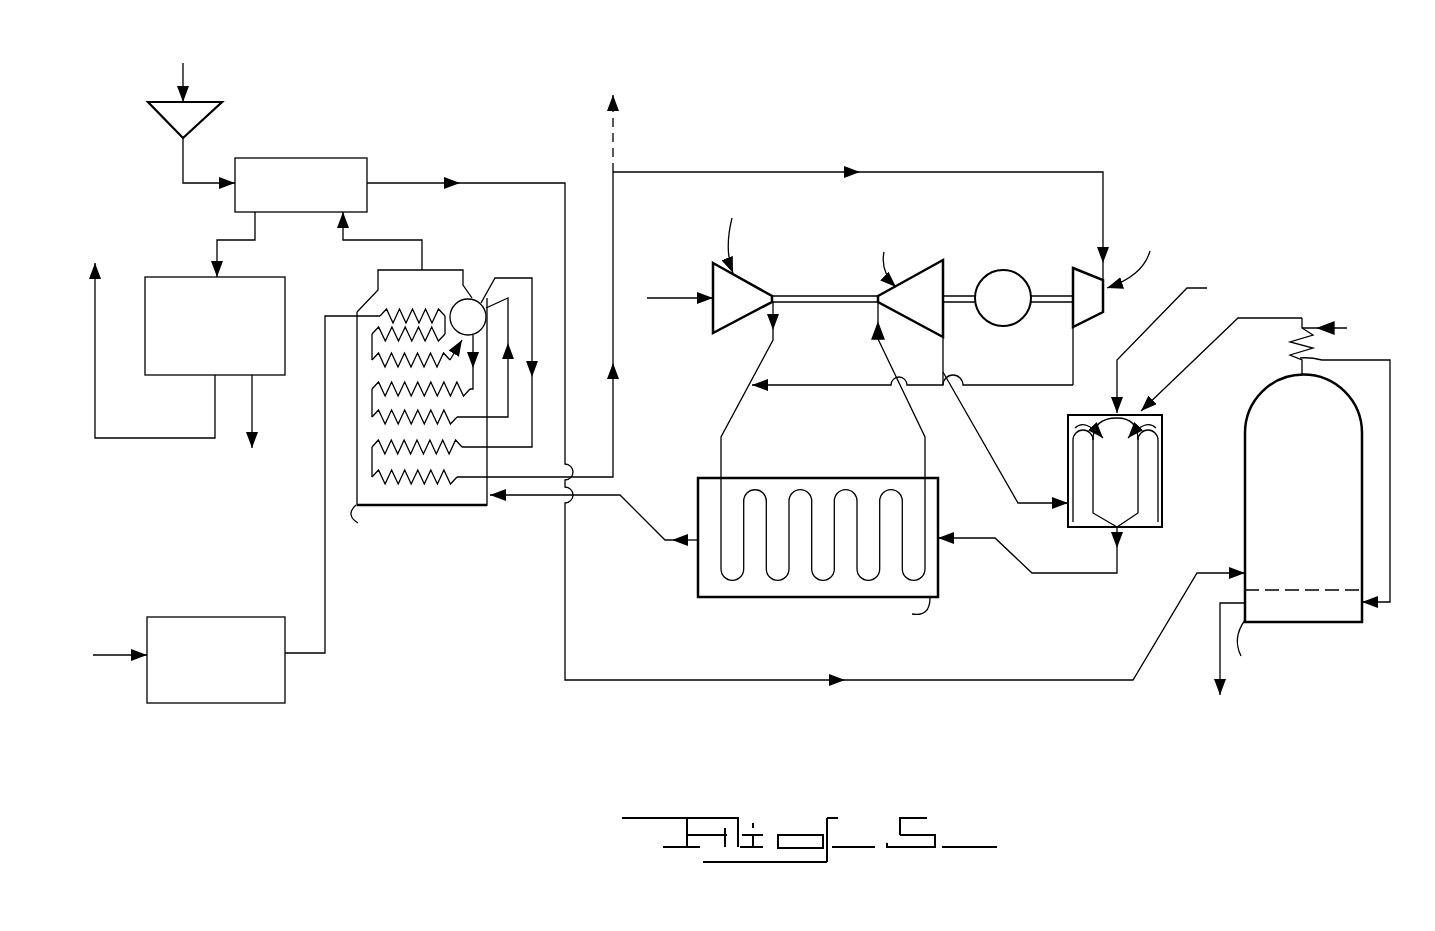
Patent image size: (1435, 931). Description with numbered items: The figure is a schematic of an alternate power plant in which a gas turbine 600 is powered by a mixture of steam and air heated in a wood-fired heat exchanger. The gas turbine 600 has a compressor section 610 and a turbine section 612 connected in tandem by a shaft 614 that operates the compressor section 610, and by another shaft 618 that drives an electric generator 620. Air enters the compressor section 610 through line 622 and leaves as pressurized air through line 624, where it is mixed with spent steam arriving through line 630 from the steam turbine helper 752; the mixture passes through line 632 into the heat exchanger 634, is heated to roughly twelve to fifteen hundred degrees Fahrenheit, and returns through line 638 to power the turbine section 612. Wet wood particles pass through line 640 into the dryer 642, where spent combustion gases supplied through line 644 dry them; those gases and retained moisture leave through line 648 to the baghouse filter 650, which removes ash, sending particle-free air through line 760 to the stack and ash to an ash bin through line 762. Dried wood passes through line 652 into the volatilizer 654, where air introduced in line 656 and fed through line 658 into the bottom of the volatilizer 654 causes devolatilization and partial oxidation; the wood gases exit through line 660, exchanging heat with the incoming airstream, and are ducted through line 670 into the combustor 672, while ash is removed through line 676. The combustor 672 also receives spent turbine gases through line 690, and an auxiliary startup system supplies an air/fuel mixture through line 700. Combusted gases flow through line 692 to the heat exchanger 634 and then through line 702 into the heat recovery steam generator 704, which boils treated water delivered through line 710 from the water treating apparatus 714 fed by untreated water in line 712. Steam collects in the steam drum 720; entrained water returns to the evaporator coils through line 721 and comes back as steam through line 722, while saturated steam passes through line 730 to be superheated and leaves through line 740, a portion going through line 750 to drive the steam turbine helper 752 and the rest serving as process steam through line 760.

The gas turbine 600 is at (852, 291).
The compressor section 610 is at (747, 281).
The turbine section 612 is at (920, 270).
The shaft 614 is at (813, 304).
The shaft 618 is at (956, 303).
The electric generator 620 is at (1003, 269).
The line 622 is at (693, 296).
The line 624 is at (757, 376).
The line 630 is at (800, 386).
The line 632 is at (722, 443).
The heat exchanger 634 is at (795, 478).
The line 638 is at (920, 428).
The line 640 is at (185, 68).
The dryer 642 is at (302, 158).
The line 644 is at (372, 240).
The line 648 is at (255, 228).
The baghouse filter 650 is at (245, 277).
The line 652 is at (420, 183).
The volatilizer 654 is at (1362, 607).
The line 656 is at (1337, 327).
The line 658 is at (1390, 430).
The line 660 is at (1302, 371).
The line 670 is at (1178, 377).
The combustor 672 is at (1162, 474).
The line 676 is at (1220, 672).
The line 690 is at (980, 440).
The line 692 is at (1073, 574).
The line 700 is at (1153, 321).
The line 702 is at (648, 522).
The heat recovery steam generator 704 is at (473, 507).
The line 710 is at (325, 505).
The line 712 is at (96, 655).
The water treating apparatus 714 is at (203, 617).
The steam drum 720 is at (473, 297).
The line 721 is at (476, 382).
The line 722 is at (512, 404).
The line 730 is at (505, 279).
The line 740 is at (615, 418).
The line 750 is at (733, 172).
The steam turbine helper 752 is at (1082, 328).
The line 760 is at (160, 438).
The line 762 is at (253, 408).